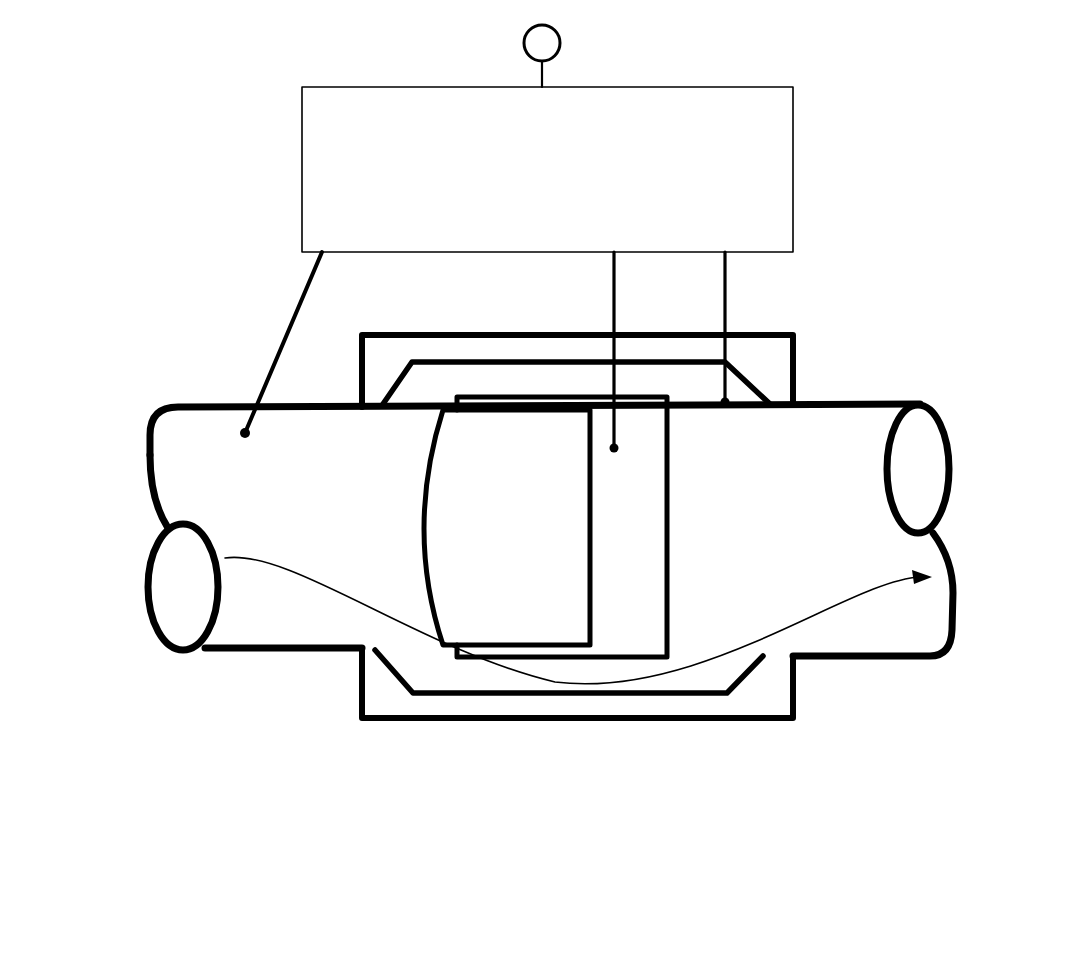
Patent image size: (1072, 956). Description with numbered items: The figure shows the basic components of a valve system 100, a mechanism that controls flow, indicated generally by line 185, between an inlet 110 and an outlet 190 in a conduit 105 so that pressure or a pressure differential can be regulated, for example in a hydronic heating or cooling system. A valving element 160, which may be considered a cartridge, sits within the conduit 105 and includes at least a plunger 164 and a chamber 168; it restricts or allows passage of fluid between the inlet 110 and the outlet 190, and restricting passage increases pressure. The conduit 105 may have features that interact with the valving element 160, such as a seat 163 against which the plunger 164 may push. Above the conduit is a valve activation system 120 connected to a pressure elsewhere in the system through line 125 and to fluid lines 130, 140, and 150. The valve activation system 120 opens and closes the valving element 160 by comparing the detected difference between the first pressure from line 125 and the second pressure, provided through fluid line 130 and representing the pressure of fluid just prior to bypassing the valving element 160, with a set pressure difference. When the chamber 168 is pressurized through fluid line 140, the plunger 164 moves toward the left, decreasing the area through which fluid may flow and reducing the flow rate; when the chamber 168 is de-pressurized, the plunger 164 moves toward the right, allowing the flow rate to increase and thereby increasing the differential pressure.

The valve system 100 is at (112, 170).
The conduit 105 is at (227, 403).
The inlet 110 is at (130, 484).
The valve activation system 120 is at (547, 169).
The connection to a pressure 125 is at (545, 72).
The fluid line 130 is at (297, 309).
The fluid line 140 is at (613, 298).
The fluid line 150 is at (725, 297).
The valving element 160 is at (372, 476).
The seat 163 is at (387, 672).
The plunger 164 is at (445, 550).
The chamber 168 is at (630, 535).
The flow 185 is at (353, 610).
The outlet 190 is at (994, 449).